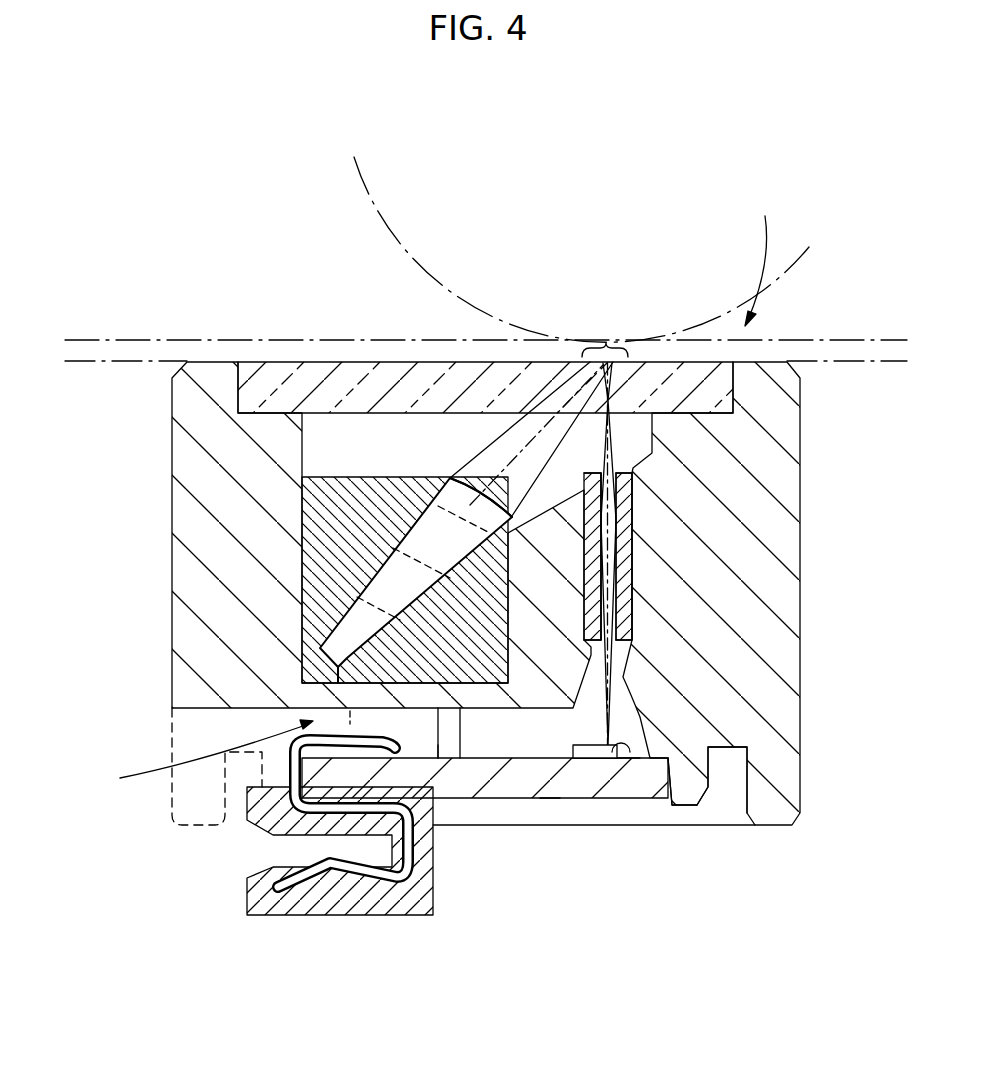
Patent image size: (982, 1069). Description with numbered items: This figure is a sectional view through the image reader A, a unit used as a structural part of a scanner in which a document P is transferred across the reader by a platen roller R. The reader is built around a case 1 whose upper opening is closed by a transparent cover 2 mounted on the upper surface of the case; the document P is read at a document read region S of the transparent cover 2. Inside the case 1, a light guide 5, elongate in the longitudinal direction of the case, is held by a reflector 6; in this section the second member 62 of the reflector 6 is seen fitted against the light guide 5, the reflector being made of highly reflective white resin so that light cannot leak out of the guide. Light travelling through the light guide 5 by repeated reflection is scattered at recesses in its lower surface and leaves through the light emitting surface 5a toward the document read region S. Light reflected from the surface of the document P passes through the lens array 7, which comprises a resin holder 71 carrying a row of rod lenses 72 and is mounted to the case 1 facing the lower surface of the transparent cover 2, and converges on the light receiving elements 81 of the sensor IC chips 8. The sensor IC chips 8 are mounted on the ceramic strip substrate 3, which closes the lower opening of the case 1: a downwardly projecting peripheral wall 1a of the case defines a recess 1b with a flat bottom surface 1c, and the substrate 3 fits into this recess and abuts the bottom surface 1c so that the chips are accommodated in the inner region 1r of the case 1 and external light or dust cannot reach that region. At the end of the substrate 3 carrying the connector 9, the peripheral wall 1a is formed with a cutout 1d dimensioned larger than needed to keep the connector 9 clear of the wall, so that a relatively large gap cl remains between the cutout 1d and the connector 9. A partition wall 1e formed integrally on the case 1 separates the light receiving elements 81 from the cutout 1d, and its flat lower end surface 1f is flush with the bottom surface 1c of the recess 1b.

The case 1 is at (790, 437).
The peripheral wall 1a is at (683, 783).
The recess 1b is at (545, 778).
The bottom surface 1c is at (653, 770).
The cutout 1d is at (227, 710).
The partition wall 1e is at (453, 735).
The lower end surface 1f is at (447, 760).
The inner region 1r is at (587, 734).
The transparent cover 2 is at (303, 378).
The substrate 3 is at (490, 778).
The light guide 5 is at (330, 600).
The light emitting surface 5a is at (478, 483).
The reflector 6 is at (276, 580).
The second member 62 is at (320, 530).
The lens array 7 is at (636, 550).
The holder 71 is at (620, 588).
The lenses 72 is at (610, 620).
The sensor IC chips 8 is at (583, 752).
The light receiving elements 81 is at (617, 746).
The connector 9 is at (262, 898).
The document P is at (125, 343).
The platen roller R is at (378, 207).
The image reader A is at (760, 256).
The document read region S is at (605, 329).
The gap cl is at (198, 759).